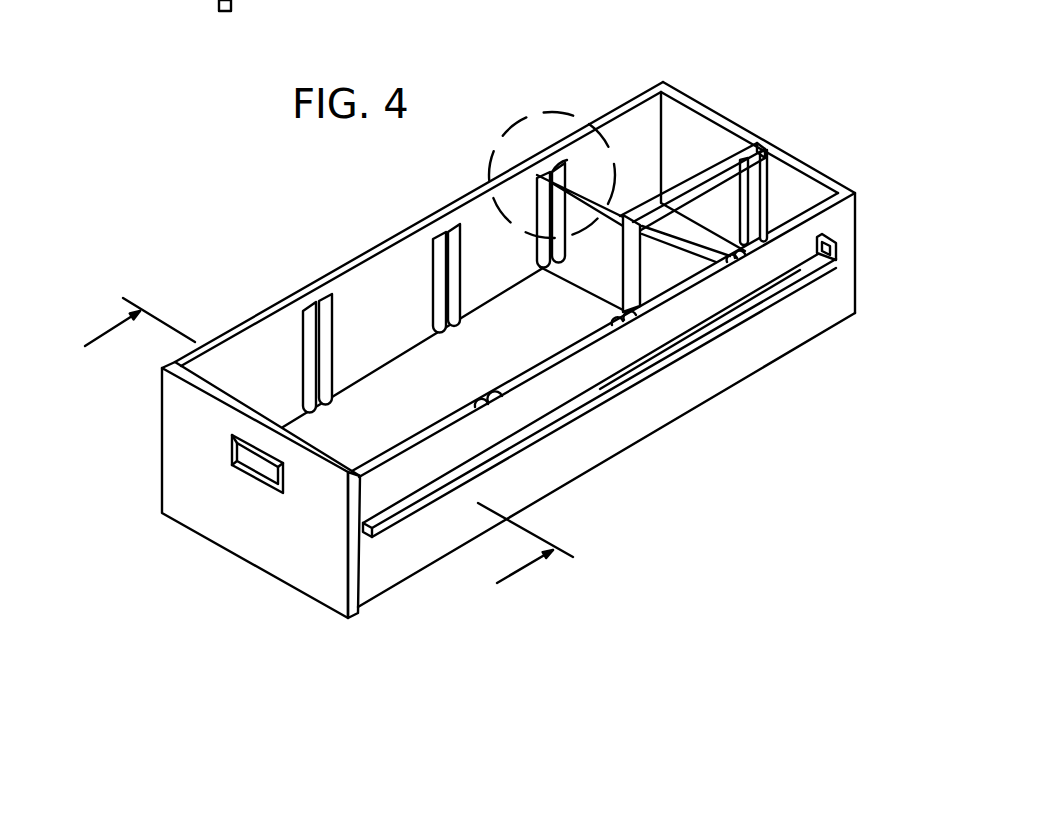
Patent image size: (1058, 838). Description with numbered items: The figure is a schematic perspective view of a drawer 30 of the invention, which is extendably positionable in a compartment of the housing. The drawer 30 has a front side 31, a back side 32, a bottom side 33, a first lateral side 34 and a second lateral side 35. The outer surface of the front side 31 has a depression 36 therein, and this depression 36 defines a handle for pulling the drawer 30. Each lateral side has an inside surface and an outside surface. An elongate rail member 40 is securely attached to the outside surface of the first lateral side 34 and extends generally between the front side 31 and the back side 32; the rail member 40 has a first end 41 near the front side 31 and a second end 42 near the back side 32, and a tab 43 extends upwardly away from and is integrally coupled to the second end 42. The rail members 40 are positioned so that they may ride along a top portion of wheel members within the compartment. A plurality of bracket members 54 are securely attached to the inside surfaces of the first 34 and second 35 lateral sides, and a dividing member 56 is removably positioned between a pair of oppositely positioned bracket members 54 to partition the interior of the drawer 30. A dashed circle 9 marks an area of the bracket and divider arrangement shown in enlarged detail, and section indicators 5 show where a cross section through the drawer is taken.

The drawer 30 is at (215, 249).
The front side 31 is at (307, 575).
The back side 32 is at (812, 167).
The bottom side 33 is at (418, 362).
The first lateral side 34 is at (610, 430).
The second lateral side 35 is at (420, 247).
The depression 36 is at (232, 465).
The rail member 40 is at (700, 332).
The first end 41 is at (363, 533).
The second end 42 is at (800, 280).
The tab 43 is at (838, 258).
The bracket member 54 is at (310, 307).
The dividing member 56 is at (613, 205).
The detail area of FIG. 9 is at (558, 115).
The section line 5- 5 is at (329, 465).